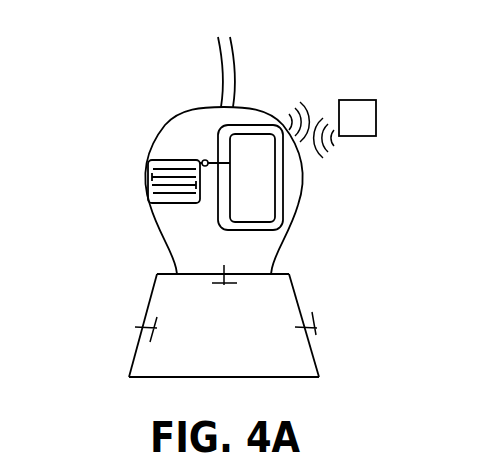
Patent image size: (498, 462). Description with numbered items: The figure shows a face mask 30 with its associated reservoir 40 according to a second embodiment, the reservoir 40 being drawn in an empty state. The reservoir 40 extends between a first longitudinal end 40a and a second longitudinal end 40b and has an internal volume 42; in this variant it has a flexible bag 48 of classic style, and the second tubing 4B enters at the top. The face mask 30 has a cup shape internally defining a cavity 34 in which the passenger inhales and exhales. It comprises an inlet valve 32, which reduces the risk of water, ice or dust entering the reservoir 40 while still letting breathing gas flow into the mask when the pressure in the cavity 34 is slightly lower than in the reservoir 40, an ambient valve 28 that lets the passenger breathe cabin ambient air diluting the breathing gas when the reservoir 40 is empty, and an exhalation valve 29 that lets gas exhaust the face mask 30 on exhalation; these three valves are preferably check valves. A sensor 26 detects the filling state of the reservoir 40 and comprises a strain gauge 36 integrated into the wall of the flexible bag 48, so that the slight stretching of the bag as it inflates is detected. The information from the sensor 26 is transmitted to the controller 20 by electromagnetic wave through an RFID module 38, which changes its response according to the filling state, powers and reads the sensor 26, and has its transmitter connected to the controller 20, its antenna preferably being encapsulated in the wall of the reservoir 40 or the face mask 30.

The controller 20 is at (360, 100).
The sensor 26 is at (80, 64).
The ambient valve 28 is at (138, 326).
The exhalation valve 29 is at (317, 328).
The face mask 30 is at (307, 383).
The inlet valve 32 is at (220, 287).
The cavity 34 is at (173, 360).
The strain gauge 36 is at (168, 160).
The RFID module 38 is at (243, 152).
The reservoir 40 is at (125, 213).
The first longitudinal end 40a is at (168, 270).
The second longitudinal end 40b is at (213, 102).
The internal volume 42 is at (247, 253).
The flexible bag 48 is at (147, 187).
The second tubing 4B is at (233, 64).